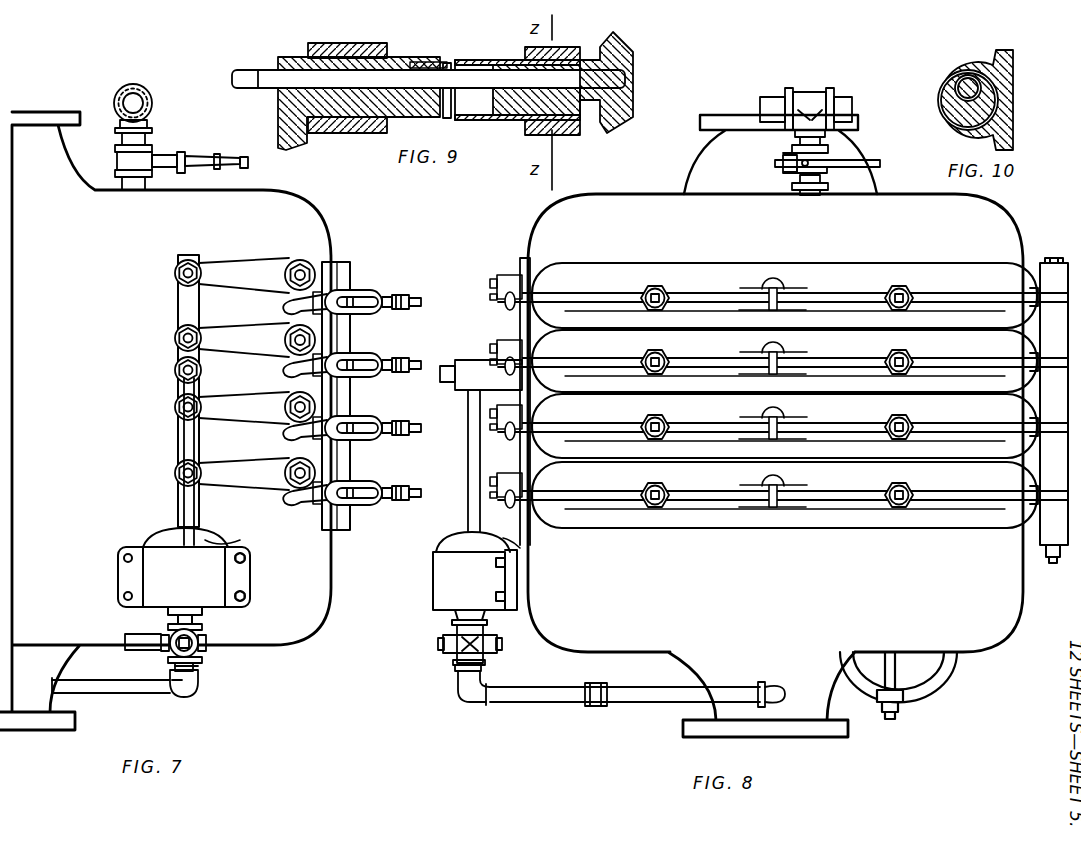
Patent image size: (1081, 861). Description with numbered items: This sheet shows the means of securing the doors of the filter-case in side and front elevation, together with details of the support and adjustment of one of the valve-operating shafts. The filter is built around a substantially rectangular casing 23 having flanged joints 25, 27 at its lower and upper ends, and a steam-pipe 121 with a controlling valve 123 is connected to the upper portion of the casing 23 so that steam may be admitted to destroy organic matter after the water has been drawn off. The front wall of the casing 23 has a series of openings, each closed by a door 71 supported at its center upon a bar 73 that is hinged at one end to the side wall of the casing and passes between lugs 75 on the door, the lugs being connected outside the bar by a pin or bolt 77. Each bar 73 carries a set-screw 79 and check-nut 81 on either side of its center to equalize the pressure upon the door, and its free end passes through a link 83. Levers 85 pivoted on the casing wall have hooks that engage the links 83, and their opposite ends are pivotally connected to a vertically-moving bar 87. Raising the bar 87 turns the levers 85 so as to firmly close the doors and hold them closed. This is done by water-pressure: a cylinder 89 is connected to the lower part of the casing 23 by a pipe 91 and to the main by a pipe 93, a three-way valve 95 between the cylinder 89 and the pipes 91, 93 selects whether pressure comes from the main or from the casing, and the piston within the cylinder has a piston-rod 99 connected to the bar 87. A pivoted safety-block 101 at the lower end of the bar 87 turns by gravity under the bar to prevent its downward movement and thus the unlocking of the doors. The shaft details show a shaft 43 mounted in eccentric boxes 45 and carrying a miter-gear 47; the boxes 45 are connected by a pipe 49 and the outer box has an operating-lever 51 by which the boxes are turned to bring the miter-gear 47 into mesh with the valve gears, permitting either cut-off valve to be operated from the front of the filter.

In FIG. 7, the casing 23 is at (305, 228).
In FIG. 8, the casing 23 is at (775, 465).
In FIG. 7, the flanged joint 25 is at (40, 700).
In FIG. 8, the flanged joint 25 is at (871, 685).
In FIG. 7, the flanged joint 27 is at (62, 172).
In FIG. 8, the flanged joint 27 is at (692, 188).
In FIG. 9, the shaft 43 is at (405, 78).
In FIG. 10, the shaft 43 is at (958, 84).
In FIG. 9, the eccentric box 45 is at (397, 112).
In FIG. 10, the eccentric box 45 is at (945, 102).
In FIG. 9, the miter-gear 47 is at (630, 62).
In FIG. 9, the pipe 49 is at (452, 66).
In FIG. 9, the operating-lever 51 is at (280, 128).
In FIG. 7, the door 71 is at (348, 280).
In FIG. 8, the door 71 is at (868, 272).
In FIG. 7, the bar 73 is at (370, 300).
In FIG. 8, the bar 73 is at (838, 300).
In FIG. 8, the lugs 75 is at (770, 395).
In FIG. 8, the pin or bolt 77 is at (778, 288).
In FIG. 7, the set-screw 79 is at (420, 305).
In FIG. 8, the set-screw 79 is at (662, 290).
In FIG. 7, the check-nut 81 is at (387, 358).
In FIG. 8, the check-nut 81 is at (670, 294).
In FIG. 7, the link 83 is at (380, 314).
In FIG. 8, the link 83 is at (522, 292).
In FIG. 7, the levers 85 is at (243, 271).
In FIG. 8, the levers 85 is at (508, 270).
In FIG. 7, the vertically-moving bar 87 is at (183, 306).
In FIG. 8, the vertically-moving bar 87 is at (531, 265).
In FIG. 7, the cylinder 89 is at (184, 576).
In FIG. 8, the cylinder 89 is at (475, 578).
In FIG. 7, the pipe 91 is at (150, 683).
In FIG. 8, the pipe 91 is at (562, 704).
In FIG. 7, the pipe 93 is at (140, 640).
In FIG. 7, the three-way valve 95 is at (200, 655).
In FIG. 8, the three-way valve 95 is at (455, 660).
In FIG. 7, the piston-rod 99 is at (185, 430).
In FIG. 8, the piston-rod 99 is at (470, 436).
In FIG. 7, the pivoted safety-block 101 is at (216, 538).
In FIG. 8, the pivoted safety-block 101 is at (525, 540).
In FIG. 7, the steam-pipe 121 is at (153, 103).
In FIG. 8, the steam-pipe 121 is at (770, 100).
In FIG. 7, the valve 123 is at (200, 168).
In FIG. 8, the valve 123 is at (838, 170).